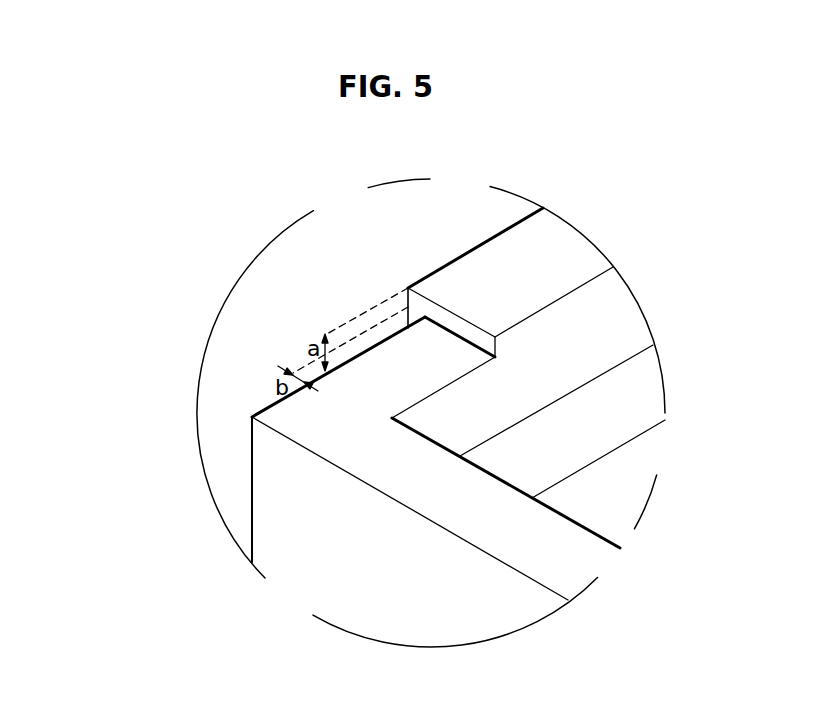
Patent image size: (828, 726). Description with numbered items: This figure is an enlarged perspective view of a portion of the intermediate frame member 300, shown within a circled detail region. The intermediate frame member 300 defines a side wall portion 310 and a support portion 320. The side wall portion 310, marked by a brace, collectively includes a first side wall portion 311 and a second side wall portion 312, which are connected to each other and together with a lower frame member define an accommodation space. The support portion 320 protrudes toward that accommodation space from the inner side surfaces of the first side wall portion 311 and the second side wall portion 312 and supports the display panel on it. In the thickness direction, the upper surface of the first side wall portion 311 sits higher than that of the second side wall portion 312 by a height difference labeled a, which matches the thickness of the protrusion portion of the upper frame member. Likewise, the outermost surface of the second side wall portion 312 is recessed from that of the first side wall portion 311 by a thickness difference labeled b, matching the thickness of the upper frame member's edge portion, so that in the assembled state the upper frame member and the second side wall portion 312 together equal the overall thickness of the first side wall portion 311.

The intermediate frame member 300 is at (245, 233).
The side wall portion 310 is at (122, 282).
The first side wall portion 311 is at (453, 278).
The second side wall portion 312 is at (288, 413).
The support portion 320 is at (610, 398).